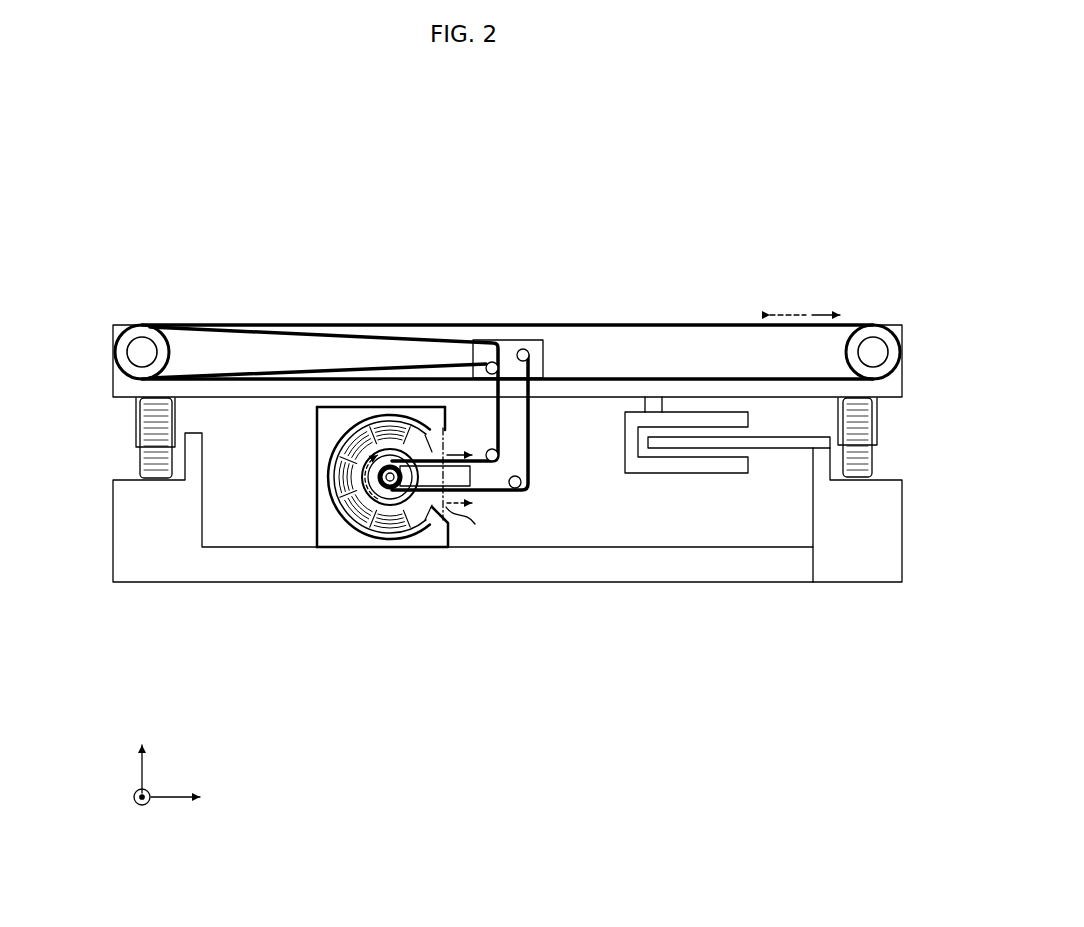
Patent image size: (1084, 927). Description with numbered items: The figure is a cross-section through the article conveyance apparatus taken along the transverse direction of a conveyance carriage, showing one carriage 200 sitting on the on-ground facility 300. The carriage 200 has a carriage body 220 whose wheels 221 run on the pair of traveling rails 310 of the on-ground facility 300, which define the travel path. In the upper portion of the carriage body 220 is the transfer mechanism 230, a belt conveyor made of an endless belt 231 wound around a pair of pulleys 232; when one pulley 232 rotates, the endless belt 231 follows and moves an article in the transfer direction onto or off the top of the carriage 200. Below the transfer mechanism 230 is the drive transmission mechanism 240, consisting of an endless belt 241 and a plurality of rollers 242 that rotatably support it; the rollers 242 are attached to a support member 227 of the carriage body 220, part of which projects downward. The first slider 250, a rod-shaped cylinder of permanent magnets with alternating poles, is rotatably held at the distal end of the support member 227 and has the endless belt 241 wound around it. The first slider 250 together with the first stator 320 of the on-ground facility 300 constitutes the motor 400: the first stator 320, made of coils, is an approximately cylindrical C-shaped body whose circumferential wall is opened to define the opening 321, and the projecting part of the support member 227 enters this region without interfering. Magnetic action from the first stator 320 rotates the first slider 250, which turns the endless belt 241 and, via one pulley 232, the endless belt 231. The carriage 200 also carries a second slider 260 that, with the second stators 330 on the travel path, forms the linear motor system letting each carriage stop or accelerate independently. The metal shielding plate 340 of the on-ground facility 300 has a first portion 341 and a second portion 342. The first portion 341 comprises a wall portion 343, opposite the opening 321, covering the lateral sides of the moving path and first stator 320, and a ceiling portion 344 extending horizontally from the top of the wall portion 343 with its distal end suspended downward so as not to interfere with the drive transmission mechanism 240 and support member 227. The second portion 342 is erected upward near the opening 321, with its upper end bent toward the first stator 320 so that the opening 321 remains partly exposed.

The carriage 200 is at (192, 194).
The carriage body 220 is at (142, 389).
The wheels 221 is at (148, 460).
The support member 227 is at (516, 490).
The transfer mechanism 230 is at (294, 307).
The endless belt 231 is at (568, 326).
The pulleys 232 is at (145, 325).
The drive transmission mechanism 240 is at (558, 361).
The endless belt 241 is at (416, 331).
The rollers 242 is at (523, 348).
The first slider 250 is at (388, 470).
The second slider 260 is at (700, 474).
The on-ground facility 300 is at (569, 636).
The traveling rails 310 is at (148, 590).
The first stator 320 is at (401, 425).
The opening 321 is at (432, 454).
The second stators 330 is at (775, 443).
The shielding plate 340 is at (455, 627).
The first portion 341 is at (330, 552).
The second portion 342 is at (443, 540).
The wall portion 343 is at (316, 491).
The ceiling portion 344 is at (357, 405).
The motor 400 is at (332, 414).